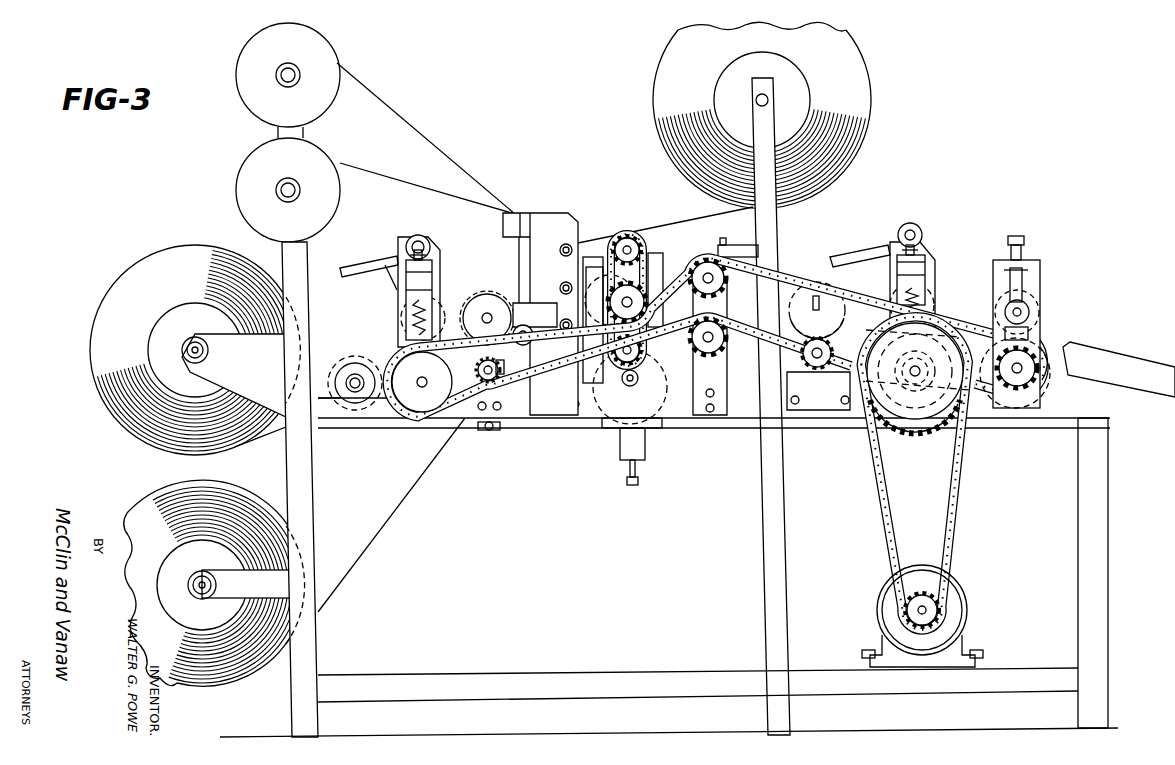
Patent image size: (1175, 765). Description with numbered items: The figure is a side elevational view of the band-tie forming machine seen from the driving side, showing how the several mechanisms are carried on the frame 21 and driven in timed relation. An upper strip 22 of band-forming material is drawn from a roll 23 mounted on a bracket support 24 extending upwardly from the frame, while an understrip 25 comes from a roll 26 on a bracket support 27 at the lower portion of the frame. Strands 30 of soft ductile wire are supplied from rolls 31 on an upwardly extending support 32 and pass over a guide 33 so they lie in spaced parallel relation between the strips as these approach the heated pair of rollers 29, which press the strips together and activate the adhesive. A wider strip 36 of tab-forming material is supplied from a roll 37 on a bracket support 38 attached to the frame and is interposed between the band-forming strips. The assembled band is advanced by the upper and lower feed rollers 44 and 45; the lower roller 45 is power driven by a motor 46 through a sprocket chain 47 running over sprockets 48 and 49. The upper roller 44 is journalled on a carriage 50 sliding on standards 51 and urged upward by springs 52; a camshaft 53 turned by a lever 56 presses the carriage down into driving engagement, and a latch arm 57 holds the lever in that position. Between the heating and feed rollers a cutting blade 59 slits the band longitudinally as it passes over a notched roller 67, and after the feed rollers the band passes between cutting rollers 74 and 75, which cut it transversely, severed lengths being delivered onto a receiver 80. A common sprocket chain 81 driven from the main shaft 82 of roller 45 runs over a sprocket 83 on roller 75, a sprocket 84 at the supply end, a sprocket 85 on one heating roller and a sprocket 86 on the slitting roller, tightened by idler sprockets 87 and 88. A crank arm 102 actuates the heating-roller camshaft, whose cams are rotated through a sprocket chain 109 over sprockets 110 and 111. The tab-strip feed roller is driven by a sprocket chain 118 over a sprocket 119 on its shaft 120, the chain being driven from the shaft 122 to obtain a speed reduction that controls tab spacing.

The frame 21 is at (334, 667).
The upper strip 22 is at (696, 218).
The roll 23 is at (864, 134).
The bracket support 24 is at (772, 230).
The understrip 25 is at (396, 514).
The roll 26 is at (232, 676).
The bracket support 27 is at (282, 577).
The rollers 29 is at (590, 300).
The strands 30 is at (420, 135).
The rolls 31 is at (250, 100).
The support 32 is at (304, 258).
The guide 33 is at (515, 214).
The strip 36 is at (272, 440).
The roll 37 is at (100, 392).
The bracket support 38 is at (234, 375).
The upper feed roller 44 is at (968, 322).
The lower feed roller 45 is at (943, 340).
The motor 46 is at (955, 611).
The sprocket chain 47 is at (955, 475).
The sprocket 48 is at (938, 605).
The sprocket 49 is at (922, 425).
The carriage 50 is at (406, 294).
The standards 51 is at (441, 272).
The springs 52 is at (906, 300).
The camshaft 53 is at (419, 236).
The lever 56 is at (376, 263).
The latch arm 57 is at (388, 276).
The cutting blade 59 is at (826, 286).
The roller 67 is at (832, 348).
The upper cutting roller 74 is at (1040, 318).
The lower cutting roller 75 is at (1048, 345).
The receiver 80 is at (1148, 332).
The sprocket chain 81 is at (762, 330).
The main shaft 82 is at (912, 382).
The sprocket 83 is at (1022, 390).
The sprocket 84 is at (503, 363).
The sprocket 85 is at (642, 258).
The sprocket 86 is at (826, 362).
The idler sprocket 87 is at (712, 355).
The idler sprocket 88 is at (710, 260).
The crank arm 102 is at (592, 256).
The sprocket chain 109 is at (640, 283).
The sprocket 110 is at (628, 238).
The sprocket 111 is at (640, 350).
The sprocket chain 118 is at (445, 412).
The sprocket 119 is at (412, 410).
The shaft 120 is at (432, 380).
The shaft 122 is at (490, 382).